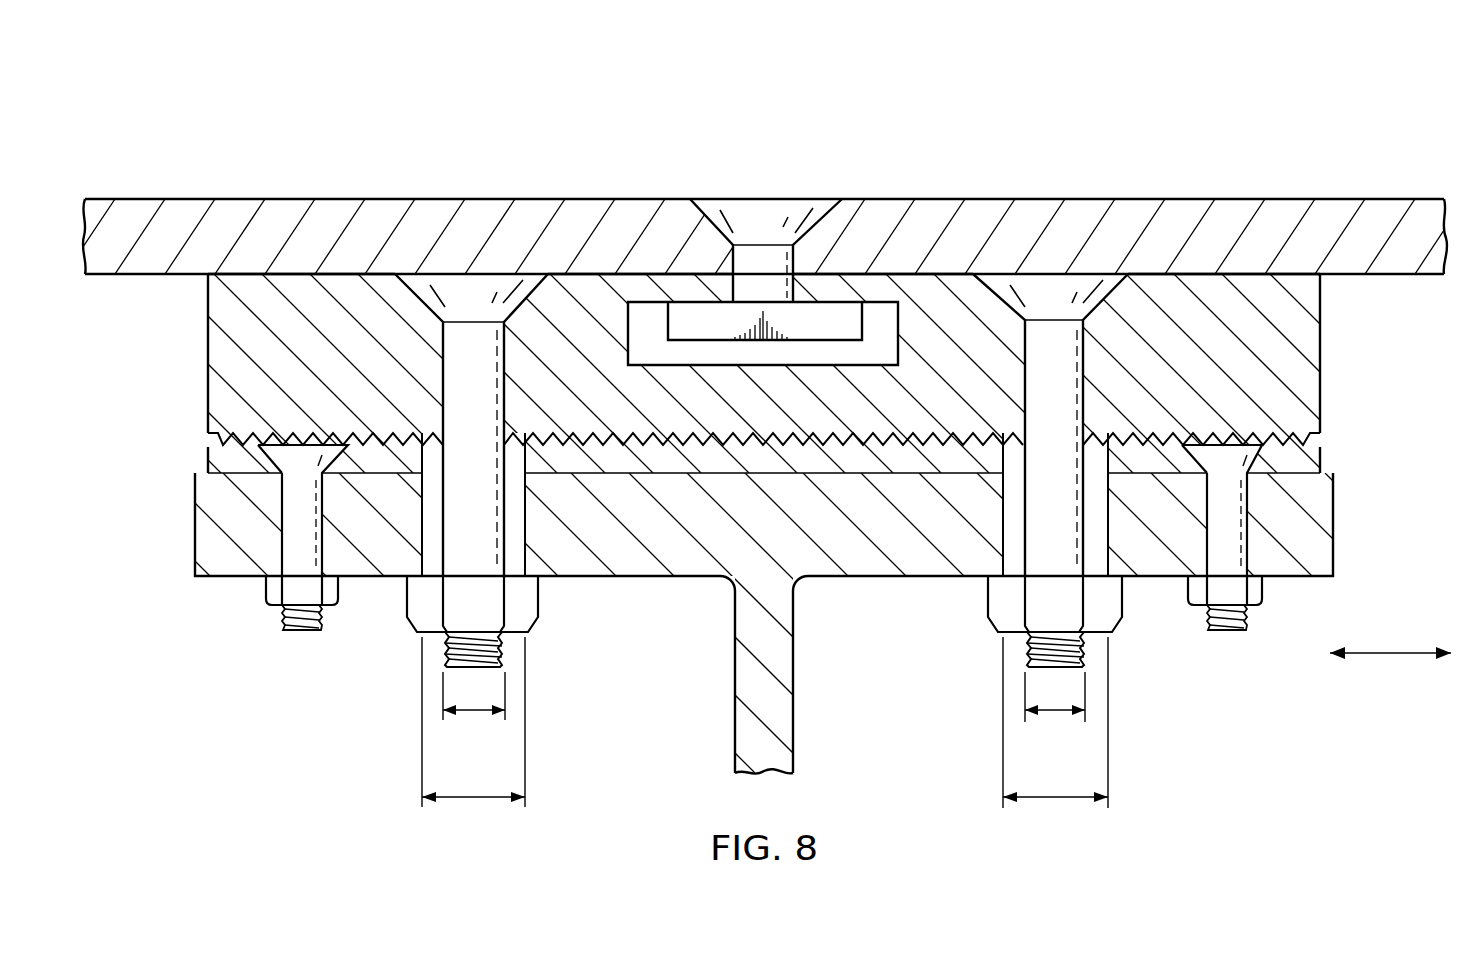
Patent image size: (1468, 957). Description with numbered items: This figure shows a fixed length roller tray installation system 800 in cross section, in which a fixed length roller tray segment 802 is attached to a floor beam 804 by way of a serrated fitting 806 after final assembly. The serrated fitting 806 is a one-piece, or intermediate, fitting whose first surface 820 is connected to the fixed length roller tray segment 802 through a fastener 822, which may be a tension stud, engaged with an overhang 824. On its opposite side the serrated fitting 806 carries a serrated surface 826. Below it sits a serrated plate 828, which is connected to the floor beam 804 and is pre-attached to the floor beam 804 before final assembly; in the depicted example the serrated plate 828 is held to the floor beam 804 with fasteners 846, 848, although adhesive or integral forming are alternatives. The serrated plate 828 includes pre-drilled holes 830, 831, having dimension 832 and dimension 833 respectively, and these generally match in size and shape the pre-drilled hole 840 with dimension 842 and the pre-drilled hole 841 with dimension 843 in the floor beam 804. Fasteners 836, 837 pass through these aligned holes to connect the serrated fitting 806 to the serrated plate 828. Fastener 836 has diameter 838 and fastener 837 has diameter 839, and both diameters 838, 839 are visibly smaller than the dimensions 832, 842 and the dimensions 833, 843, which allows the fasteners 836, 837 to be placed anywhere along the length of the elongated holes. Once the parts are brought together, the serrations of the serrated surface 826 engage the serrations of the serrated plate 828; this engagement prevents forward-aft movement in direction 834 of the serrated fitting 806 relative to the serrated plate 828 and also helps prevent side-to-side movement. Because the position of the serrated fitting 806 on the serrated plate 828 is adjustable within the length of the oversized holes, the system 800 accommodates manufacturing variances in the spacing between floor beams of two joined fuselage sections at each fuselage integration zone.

The fixed length roller tray installation system 800 is at (578, 112).
The fixed length roller tray segment 802 is at (1192, 204).
The floor beam 804 is at (745, 676).
The serrated fitting 806 is at (1310, 364).
The first surface 820 is at (1304, 268).
The fastener 822 is at (767, 199).
The overhang 824 is at (630, 320).
The serrated surface 826 is at (1319, 433).
The serrated plate 828 is at (1316, 457).
The pre-drilled hole 830 is at (1106, 478).
The pre-drilled hole 831 is at (522, 484).
The dimension 832 is at (1056, 799).
The dimension 833 is at (474, 799).
The direction 834 is at (1390, 655).
The fastener 836 is at (1070, 394).
The fastener 837 is at (490, 380).
The diameter 838 is at (1056, 712).
The diameter 839 is at (474, 712).
The pre-drilled hole 840 is at (1006, 530).
The pre-drilled hole 841 is at (522, 531).
The dimension 842 is at (1057, 745).
The dimension 843 is at (471, 746).
The fastener 846 is at (305, 632).
The fastener 848 is at (1228, 631).